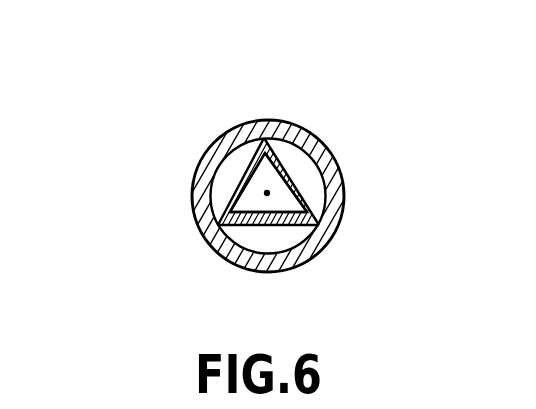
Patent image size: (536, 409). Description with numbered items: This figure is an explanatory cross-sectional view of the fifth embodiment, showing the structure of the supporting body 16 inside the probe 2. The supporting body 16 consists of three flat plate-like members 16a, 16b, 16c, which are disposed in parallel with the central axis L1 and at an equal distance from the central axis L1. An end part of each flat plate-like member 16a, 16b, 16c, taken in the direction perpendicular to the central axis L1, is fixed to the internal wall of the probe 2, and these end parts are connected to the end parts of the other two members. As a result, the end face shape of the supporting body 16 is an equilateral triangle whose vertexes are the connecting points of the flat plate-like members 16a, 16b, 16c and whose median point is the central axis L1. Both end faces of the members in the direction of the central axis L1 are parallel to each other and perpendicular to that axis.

The probe 2 is at (334, 235).
The supporting body 16 is at (230, 176).
The flat plate-like member 16a is at (240, 145).
The flat plate-like member 16b is at (318, 140).
The flat plate-like member 16c is at (250, 225).
The central axis L1 is at (267, 193).